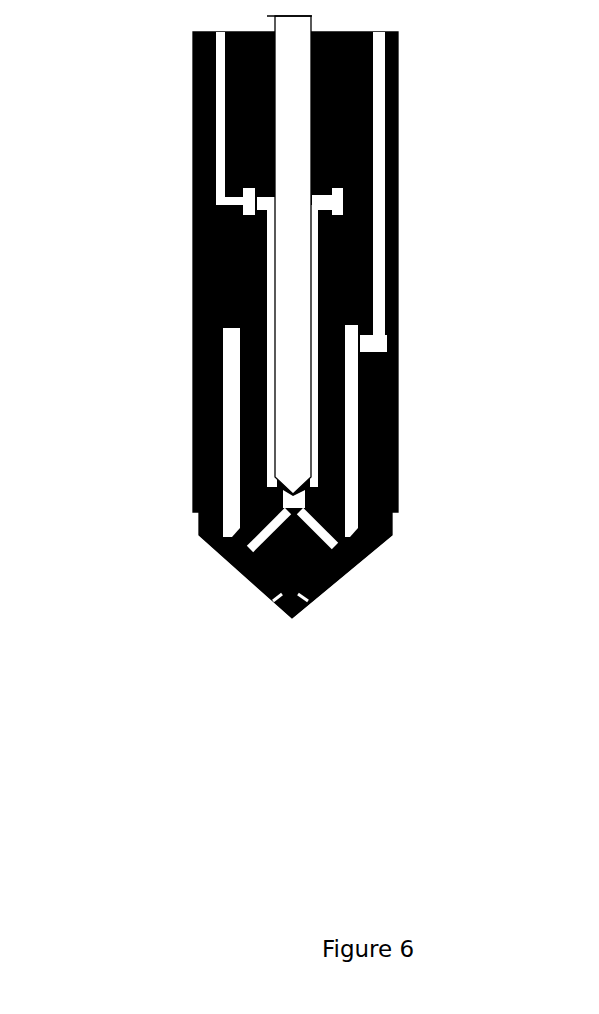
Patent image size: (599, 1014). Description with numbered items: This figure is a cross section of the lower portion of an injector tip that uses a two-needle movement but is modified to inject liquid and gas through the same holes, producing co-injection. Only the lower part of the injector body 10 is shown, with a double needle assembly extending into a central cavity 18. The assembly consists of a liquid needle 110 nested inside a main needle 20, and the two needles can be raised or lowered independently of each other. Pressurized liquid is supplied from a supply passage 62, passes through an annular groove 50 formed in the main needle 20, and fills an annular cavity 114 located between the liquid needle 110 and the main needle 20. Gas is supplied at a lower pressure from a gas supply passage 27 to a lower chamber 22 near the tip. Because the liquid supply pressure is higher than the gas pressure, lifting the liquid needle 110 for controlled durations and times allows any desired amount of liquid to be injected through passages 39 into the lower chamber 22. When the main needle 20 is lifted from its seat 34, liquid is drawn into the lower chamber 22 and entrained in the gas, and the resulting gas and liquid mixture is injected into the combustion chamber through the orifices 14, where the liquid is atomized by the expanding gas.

The injector body 10 is at (193, 298).
The annular groove 50 is at (193, 218).
The supply passage 62 is at (222, 104).
The gas supply passage 27 is at (380, 122).
The central cavity 18 is at (237, 435).
The main needle 20 is at (243, 400).
The annular cavity 114 is at (315, 365).
The liquid needle 110 is at (298, 392).
The passages 39 is at (307, 513).
The lower chamber 22 is at (232, 528).
The orifices 14 is at (272, 598).
The seat 34 is at (343, 575).